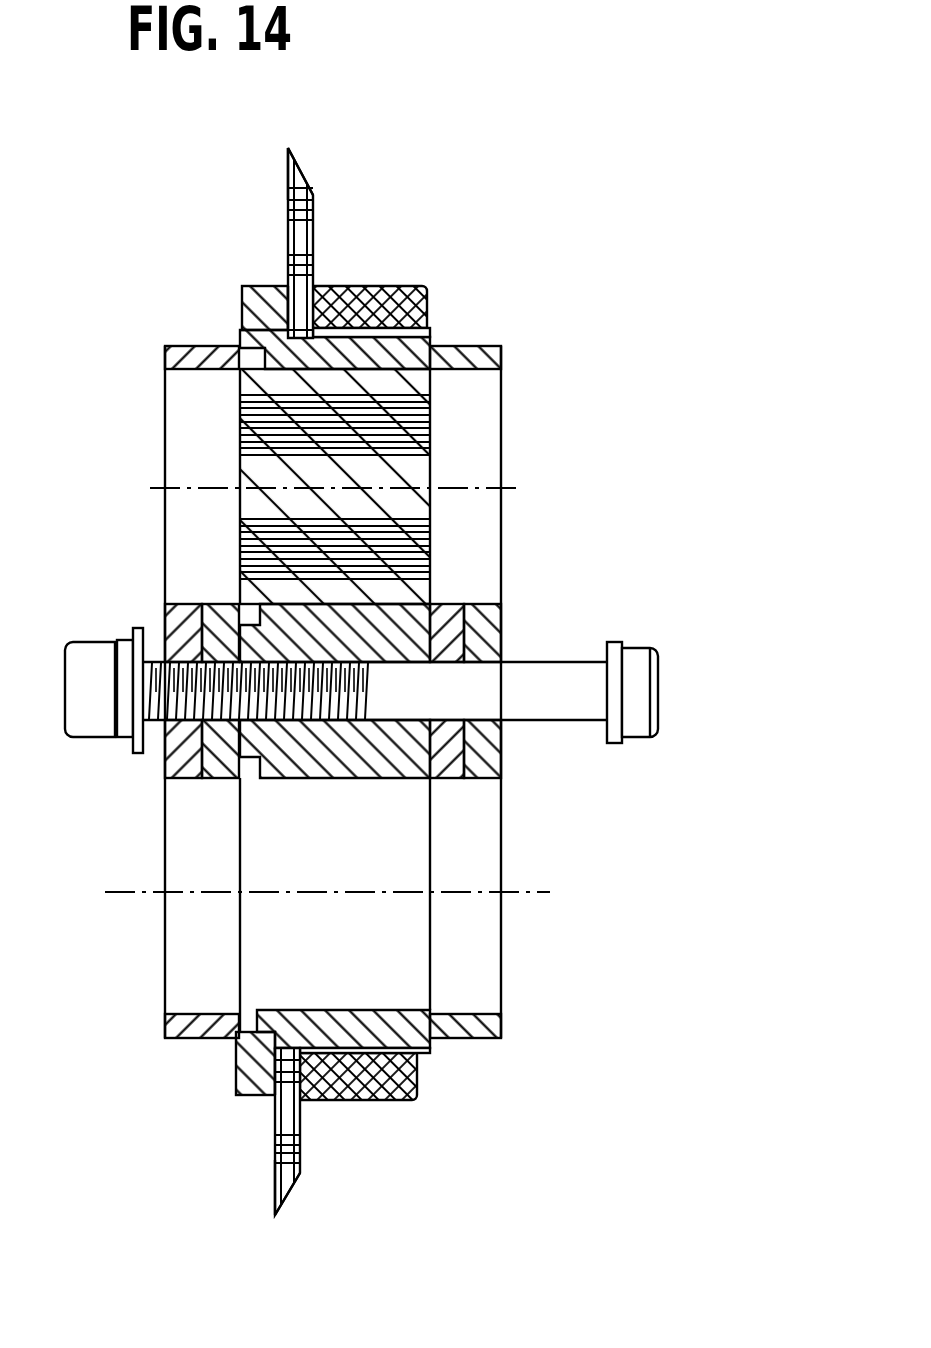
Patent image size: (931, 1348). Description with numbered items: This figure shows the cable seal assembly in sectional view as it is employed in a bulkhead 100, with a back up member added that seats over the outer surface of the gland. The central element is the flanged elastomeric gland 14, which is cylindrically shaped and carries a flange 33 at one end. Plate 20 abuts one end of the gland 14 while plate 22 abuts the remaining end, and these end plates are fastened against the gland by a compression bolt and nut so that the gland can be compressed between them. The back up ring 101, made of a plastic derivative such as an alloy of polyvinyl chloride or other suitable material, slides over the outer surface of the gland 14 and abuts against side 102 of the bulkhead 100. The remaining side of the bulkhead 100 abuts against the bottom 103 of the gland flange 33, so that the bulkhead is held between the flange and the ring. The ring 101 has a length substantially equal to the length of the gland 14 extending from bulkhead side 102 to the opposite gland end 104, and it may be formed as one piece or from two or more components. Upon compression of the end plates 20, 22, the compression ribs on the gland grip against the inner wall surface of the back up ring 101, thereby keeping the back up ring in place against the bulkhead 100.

The flanged elastomeric gland 14 is at (433, 373).
The plate 20 is at (165, 355).
The plate 22 is at (503, 358).
The flange 33 is at (241, 303).
The bulkhead 100 is at (323, 198).
The back up ring 101 is at (427, 287).
The side of bulkhead 102 is at (313, 277).
The bottom of gland flange 103 is at (283, 285).
The opposite gland end 104 is at (430, 332).